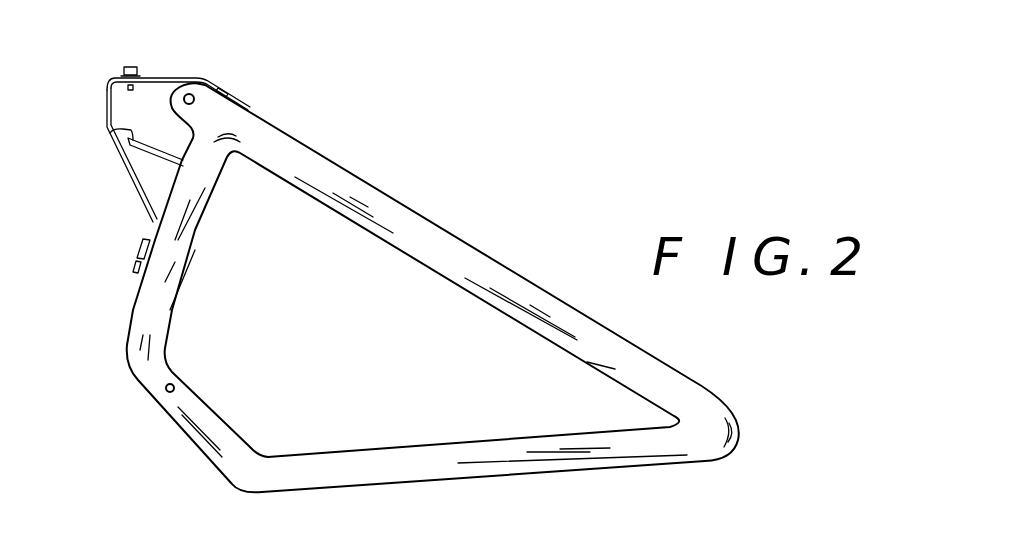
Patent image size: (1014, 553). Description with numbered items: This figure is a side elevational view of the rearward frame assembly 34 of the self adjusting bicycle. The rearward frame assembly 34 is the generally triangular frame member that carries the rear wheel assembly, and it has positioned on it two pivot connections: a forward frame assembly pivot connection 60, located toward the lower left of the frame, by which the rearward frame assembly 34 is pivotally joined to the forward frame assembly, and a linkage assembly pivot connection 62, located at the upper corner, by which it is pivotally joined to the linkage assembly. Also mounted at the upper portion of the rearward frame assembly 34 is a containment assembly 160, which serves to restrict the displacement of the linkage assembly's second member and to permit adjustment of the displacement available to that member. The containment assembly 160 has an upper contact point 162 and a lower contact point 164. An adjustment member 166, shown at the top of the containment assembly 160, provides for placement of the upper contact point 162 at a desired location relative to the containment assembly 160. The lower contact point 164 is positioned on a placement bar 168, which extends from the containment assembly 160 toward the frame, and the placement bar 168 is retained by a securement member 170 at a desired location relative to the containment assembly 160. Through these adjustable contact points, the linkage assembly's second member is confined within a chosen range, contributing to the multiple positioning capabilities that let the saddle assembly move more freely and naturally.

The rearward frame assembly 34 is at (519, 181).
The forward frame assembly pivot connection 60 is at (168, 394).
The linkage assembly pivot connection 62 is at (193, 96).
The containment assembly 160 is at (149, 139).
The upper contact point 162 is at (127, 92).
The lower contact point 164 is at (128, 138).
The adjustment member 166 is at (131, 66).
The placement bar 168 is at (170, 178).
The securement member 170 is at (143, 237).